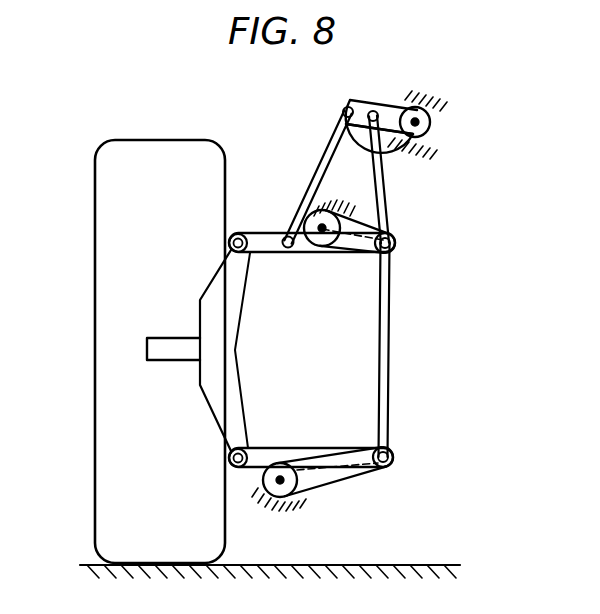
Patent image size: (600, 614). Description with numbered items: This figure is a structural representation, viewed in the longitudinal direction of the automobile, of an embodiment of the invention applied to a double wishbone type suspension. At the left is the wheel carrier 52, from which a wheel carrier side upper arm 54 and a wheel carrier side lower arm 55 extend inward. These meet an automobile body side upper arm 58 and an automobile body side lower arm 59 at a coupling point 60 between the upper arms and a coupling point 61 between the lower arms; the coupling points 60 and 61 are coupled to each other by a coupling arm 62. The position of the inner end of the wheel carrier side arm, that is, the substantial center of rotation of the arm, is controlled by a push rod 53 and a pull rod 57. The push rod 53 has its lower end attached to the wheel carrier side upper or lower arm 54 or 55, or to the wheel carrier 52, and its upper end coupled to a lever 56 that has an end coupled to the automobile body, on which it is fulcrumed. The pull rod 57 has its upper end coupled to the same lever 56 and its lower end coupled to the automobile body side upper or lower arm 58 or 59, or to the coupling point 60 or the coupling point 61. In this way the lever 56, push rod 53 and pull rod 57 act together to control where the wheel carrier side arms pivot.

The wheel carrier 52 is at (208, 324).
The push rod 53 is at (327, 150).
The wheel carrier side upper arm 54 is at (301, 248).
The wheel carrier side lower arm 55 is at (298, 452).
The lever 56 is at (392, 110).
The pull rod 57 is at (380, 163).
The automobile body side upper arm 58 is at (352, 217).
The automobile body side lower arm 59 is at (330, 478).
The coupling point 60 is at (394, 249).
The coupling point 61 is at (392, 457).
The coupling arm 62 is at (387, 385).